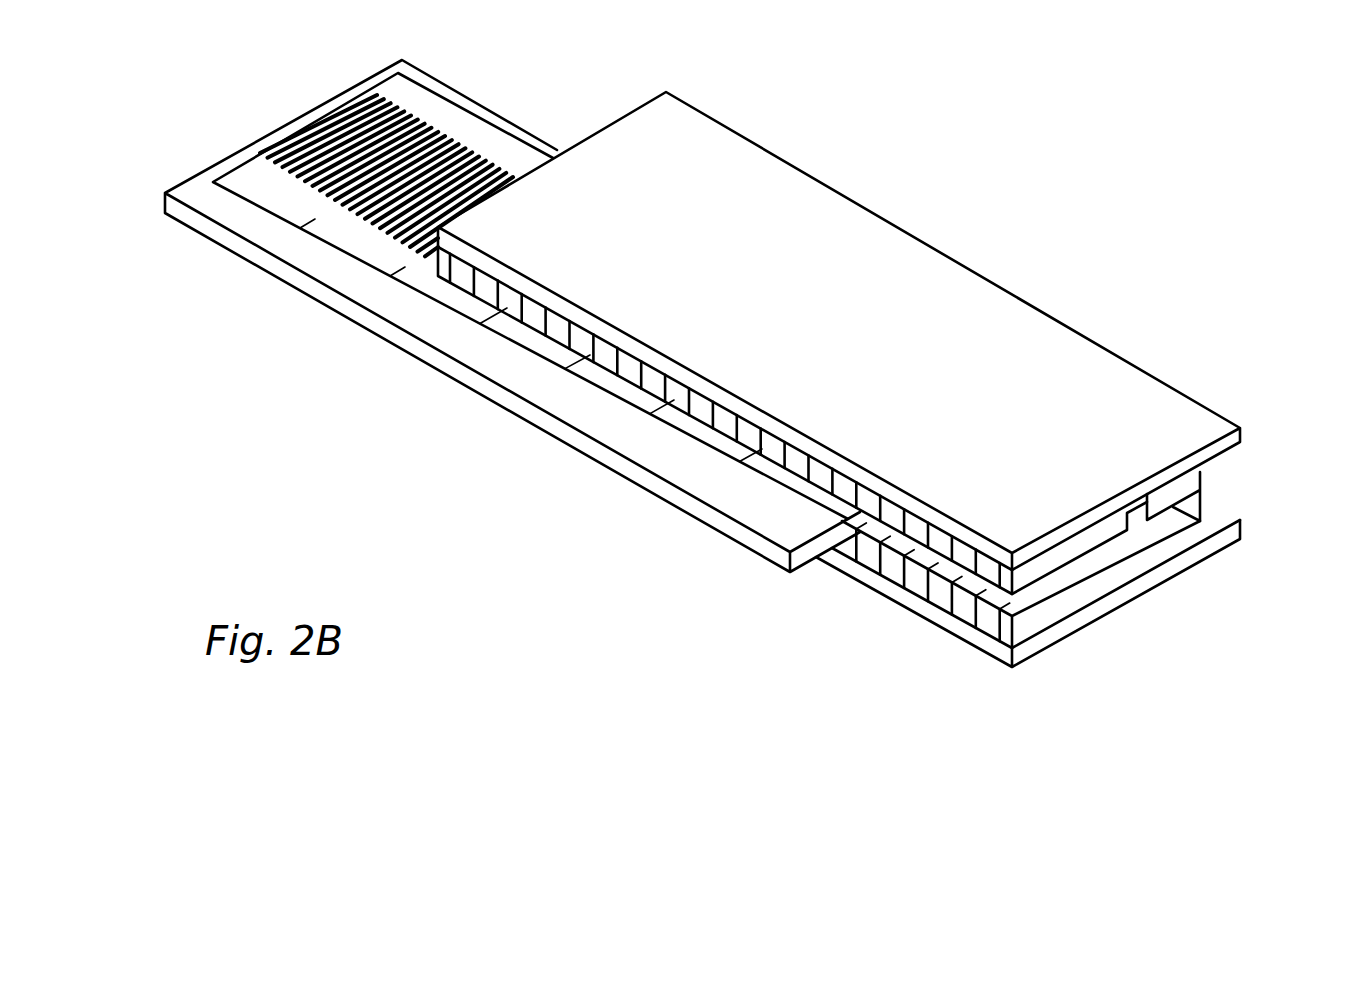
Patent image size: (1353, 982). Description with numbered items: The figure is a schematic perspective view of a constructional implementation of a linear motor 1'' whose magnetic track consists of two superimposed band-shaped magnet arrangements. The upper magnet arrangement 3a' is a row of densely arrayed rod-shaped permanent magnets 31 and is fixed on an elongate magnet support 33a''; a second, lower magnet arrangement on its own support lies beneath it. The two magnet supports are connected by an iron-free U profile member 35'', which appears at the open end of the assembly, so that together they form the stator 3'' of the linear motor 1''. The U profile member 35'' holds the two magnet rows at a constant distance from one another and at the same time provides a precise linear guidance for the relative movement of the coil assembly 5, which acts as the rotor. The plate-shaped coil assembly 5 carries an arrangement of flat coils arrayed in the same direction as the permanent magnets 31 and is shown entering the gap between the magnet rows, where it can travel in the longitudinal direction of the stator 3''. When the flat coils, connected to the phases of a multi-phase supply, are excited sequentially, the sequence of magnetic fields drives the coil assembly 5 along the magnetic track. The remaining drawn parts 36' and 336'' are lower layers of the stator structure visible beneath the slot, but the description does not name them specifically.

The linear motor 1'' is at (734, 401).
The coil assembly 5 is at (500, 395).
The stator 3'' is at (870, 417).
The magnet support 33a'' is at (839, 331).
The magnet arrangement 3a' is at (1132, 454).
The permanent magnets 31 is at (967, 608).
The intermediate support layer 36' is at (1036, 606).
The base plate 336'' is at (1028, 631).
The U profile member 35'' is at (1201, 555).